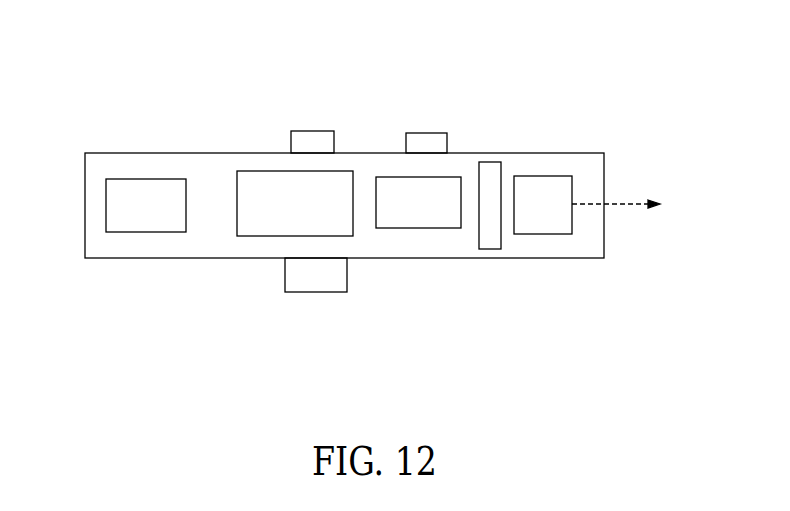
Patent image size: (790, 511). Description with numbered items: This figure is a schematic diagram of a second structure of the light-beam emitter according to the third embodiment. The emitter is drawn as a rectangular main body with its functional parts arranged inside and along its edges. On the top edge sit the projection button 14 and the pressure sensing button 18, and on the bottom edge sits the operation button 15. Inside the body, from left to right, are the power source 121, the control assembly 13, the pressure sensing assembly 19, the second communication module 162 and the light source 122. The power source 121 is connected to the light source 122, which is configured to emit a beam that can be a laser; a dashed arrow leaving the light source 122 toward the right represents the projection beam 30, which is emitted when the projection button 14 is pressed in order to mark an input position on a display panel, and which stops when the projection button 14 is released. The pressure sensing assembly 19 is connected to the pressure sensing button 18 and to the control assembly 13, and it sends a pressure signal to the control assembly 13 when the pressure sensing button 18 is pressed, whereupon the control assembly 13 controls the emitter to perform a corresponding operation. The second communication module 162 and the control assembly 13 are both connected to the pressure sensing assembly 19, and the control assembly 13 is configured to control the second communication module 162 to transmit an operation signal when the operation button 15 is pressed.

The power source 121 is at (148, 200).
The control assembly 13 is at (264, 216).
The projection button 14 is at (310, 148).
The operation button 15 is at (323, 277).
The pressure sensing button 18 is at (425, 148).
The pressure sensing assembly 19 is at (430, 209).
The second communication module 162 is at (490, 249).
The light source 122 is at (552, 207).
The projection beam 30 is at (640, 207).